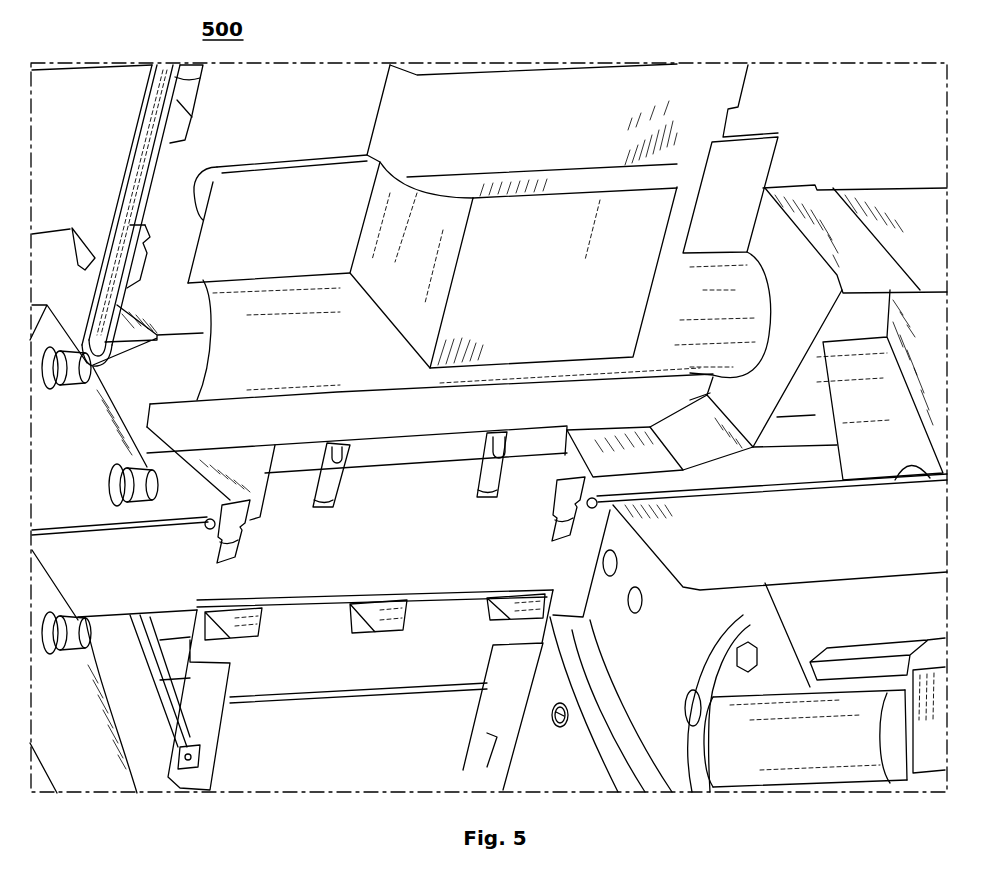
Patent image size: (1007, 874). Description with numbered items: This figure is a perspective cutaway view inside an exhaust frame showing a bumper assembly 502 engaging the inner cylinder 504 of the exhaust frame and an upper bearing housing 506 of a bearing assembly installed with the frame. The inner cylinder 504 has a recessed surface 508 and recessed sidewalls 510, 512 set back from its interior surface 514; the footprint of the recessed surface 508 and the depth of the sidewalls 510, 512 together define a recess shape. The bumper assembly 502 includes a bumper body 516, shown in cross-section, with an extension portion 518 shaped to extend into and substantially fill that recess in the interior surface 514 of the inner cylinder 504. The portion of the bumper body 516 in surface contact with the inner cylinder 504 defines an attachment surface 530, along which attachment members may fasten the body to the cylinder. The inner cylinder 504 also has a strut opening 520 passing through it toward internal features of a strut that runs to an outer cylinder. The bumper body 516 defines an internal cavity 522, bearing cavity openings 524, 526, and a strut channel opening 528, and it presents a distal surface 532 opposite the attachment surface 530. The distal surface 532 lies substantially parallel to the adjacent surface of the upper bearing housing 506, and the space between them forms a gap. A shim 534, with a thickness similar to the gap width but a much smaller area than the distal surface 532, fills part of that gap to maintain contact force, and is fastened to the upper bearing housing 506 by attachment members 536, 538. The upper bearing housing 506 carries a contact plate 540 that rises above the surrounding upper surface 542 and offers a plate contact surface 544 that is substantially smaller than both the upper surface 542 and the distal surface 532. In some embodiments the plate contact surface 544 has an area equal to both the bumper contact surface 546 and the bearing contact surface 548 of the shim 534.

The bumper assembly 502 is at (773, 388).
The inner cylinder 504 is at (78, 125).
The upper bearing housing 506 is at (97, 530).
The recessed surface 508 is at (305, 157).
The recessed sidewall 510 is at (218, 165).
The recessed sidewall 512 is at (770, 163).
The interior surface 514 is at (818, 183).
The bumper body 516 is at (237, 240).
The extension portion 518 is at (193, 190).
The strut opening 520 is at (747, 85).
The internal cavity 522 is at (613, 213).
The bearing cavity opening 524 is at (200, 357).
The bearing cavity opening 526 is at (767, 335).
The strut channel opening 528 is at (395, 155).
The attachment surface 530 is at (837, 277).
The distal surface 532 is at (670, 482).
The shim 534 is at (403, 455).
The attachment member 536 is at (323, 500).
The attachment member 538 is at (490, 490).
The contact plate 540 is at (287, 490).
The upper surface 542 is at (650, 505).
The plate contact surface 544 is at (433, 467).
The bumper contact surface 546 is at (390, 437).
The bearing contact surface 548 is at (373, 470).